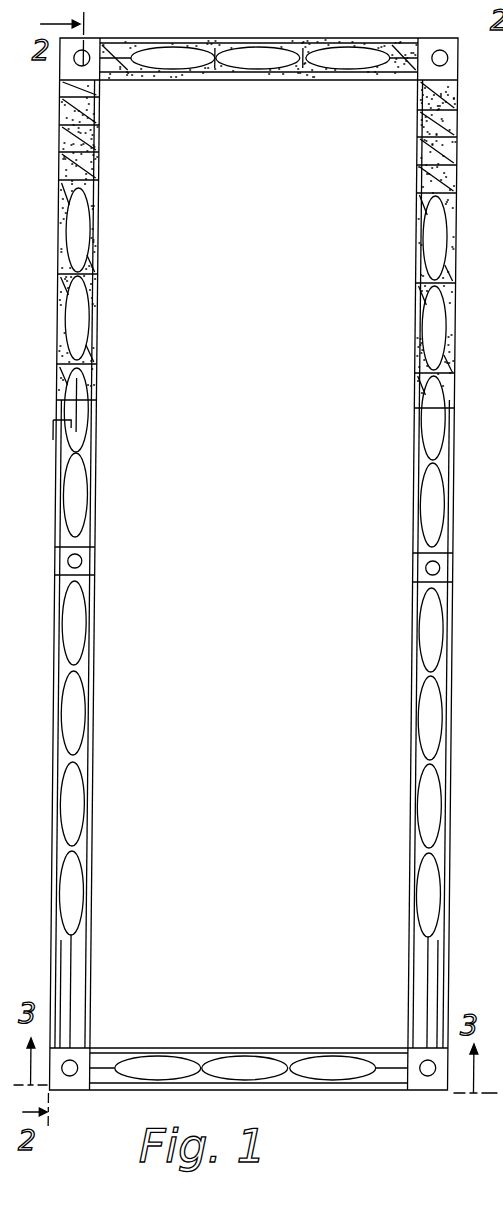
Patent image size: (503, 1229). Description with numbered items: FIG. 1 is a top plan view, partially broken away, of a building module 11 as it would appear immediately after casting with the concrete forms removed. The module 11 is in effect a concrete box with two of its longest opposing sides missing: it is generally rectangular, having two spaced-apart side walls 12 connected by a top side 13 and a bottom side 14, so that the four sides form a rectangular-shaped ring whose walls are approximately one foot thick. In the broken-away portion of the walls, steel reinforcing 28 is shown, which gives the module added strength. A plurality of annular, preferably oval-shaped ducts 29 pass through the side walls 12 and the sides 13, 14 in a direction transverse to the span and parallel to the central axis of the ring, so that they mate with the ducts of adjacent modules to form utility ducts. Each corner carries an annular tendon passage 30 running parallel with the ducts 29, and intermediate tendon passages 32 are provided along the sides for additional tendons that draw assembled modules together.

The building module 11 is at (462, 490).
The side walls 12 is at (266, 82).
The top side 13 is at (101, 690).
The bottom side 14 is at (417, 690).
The steel reinforcing 28 is at (101, 150).
The ducts 29 is at (432, 331).
The tendon passage 30 is at (88, 48).
The intermediate tendon passages 32 is at (88, 561).